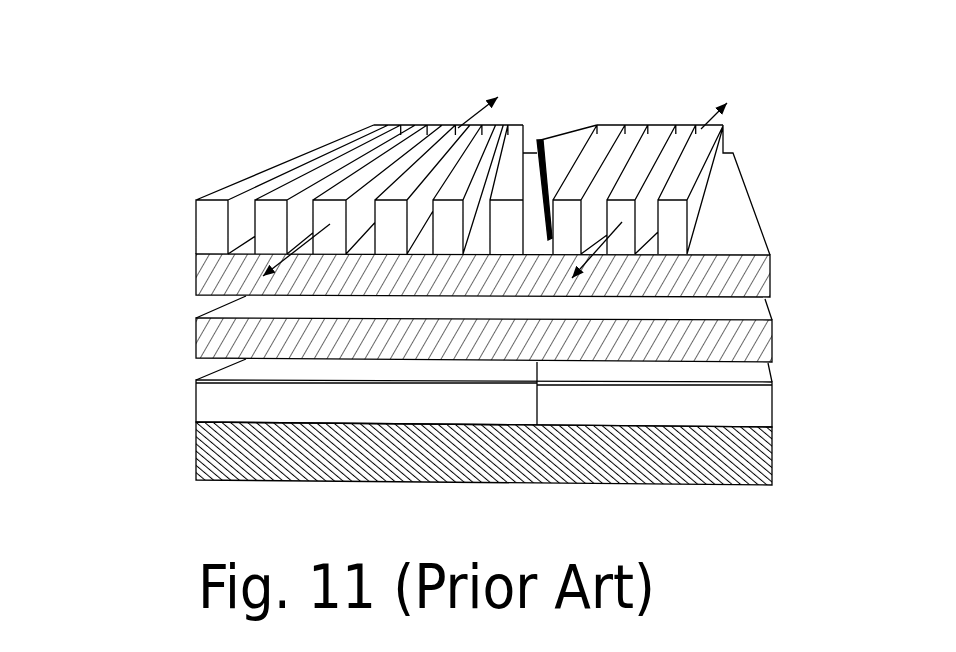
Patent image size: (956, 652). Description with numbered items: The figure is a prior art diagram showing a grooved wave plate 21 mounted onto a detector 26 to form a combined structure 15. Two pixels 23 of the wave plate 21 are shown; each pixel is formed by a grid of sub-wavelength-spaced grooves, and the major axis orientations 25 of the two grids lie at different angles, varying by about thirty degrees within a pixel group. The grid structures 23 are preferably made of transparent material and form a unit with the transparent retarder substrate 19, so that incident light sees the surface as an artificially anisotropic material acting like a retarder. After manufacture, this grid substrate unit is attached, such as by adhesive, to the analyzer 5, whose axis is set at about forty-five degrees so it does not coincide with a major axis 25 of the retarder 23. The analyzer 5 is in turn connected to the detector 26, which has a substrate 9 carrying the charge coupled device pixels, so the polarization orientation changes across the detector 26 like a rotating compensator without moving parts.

The combined structure 15 is at (447, 341).
The transparent retarder substrate 19 is at (772, 278).
The wave plate 21 is at (481, 153).
The pixels 23 is at (360, 133).
The major axis orientations 25 is at (463, 122).
The analyzer 5 is at (772, 340).
The detector 26 is at (496, 416).
The substrate 9 is at (772, 452).